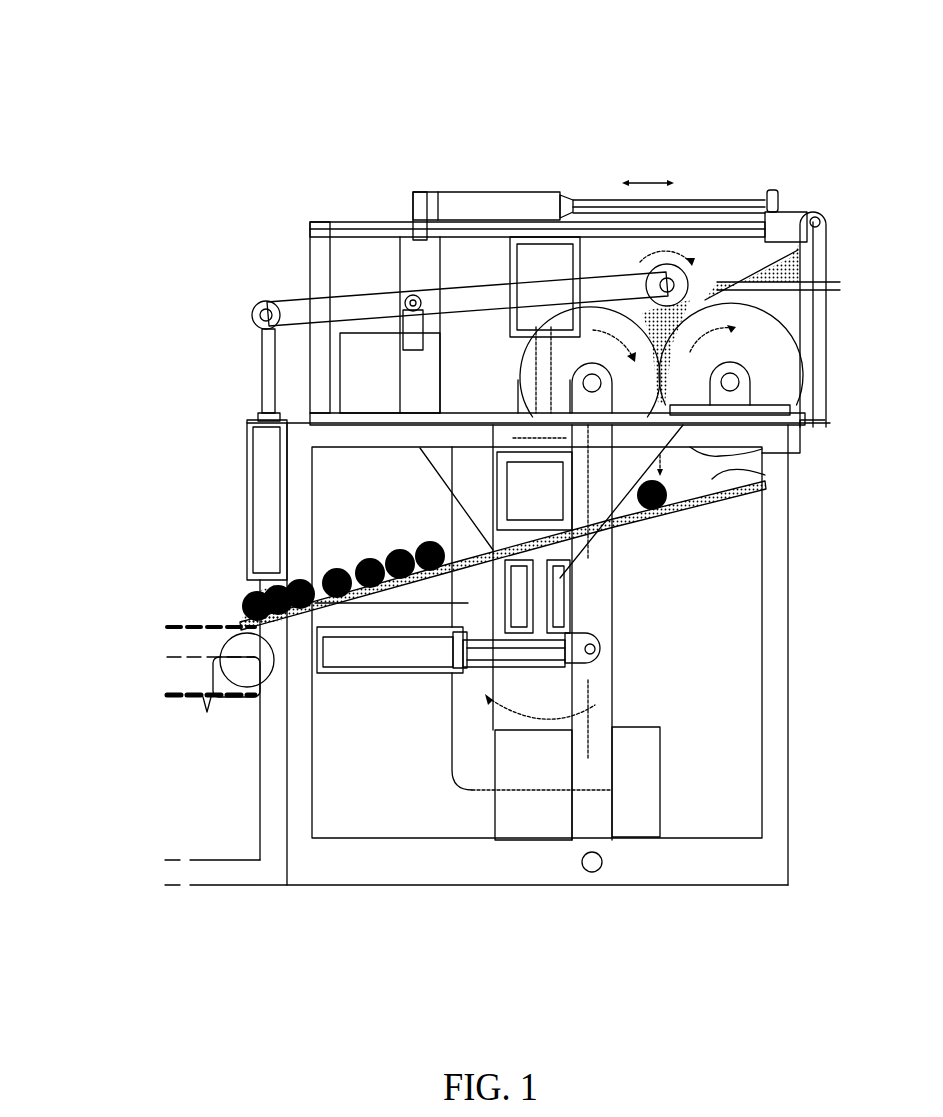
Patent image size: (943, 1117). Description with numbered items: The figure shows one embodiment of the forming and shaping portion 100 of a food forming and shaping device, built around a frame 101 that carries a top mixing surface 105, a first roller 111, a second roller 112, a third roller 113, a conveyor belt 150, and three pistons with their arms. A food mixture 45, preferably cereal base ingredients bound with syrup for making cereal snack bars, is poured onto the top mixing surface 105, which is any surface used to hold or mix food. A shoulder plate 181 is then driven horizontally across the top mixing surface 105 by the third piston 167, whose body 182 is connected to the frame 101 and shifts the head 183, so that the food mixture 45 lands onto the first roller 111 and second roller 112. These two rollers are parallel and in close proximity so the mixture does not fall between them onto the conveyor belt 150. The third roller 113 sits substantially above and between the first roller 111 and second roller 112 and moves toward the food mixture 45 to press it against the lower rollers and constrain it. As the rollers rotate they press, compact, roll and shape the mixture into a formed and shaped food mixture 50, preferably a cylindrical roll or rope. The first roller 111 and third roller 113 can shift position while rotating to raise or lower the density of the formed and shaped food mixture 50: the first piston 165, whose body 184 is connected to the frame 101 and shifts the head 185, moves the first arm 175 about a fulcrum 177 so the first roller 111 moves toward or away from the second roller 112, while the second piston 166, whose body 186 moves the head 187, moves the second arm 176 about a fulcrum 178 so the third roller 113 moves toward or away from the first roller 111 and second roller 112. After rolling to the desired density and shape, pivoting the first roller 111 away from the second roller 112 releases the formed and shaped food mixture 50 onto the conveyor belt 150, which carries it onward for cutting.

The forming and shaping portion 100 is at (795, 55).
The frame 101 is at (796, 678).
The third piston 167 is at (437, 166).
The third roller 113 is at (688, 237).
The body 182 is at (535, 190).
The head 183 is at (772, 190).
The shoulder plate 181 is at (812, 214).
The head 187 is at (262, 305).
The fulcrum 178 is at (413, 296).
The second arm 176 is at (598, 292).
The first roller 111 is at (528, 367).
The second roller 112 is at (783, 367).
The top mixing surface 105 is at (797, 289).
The food mixture 45 is at (826, 258).
The body 186 is at (267, 485).
The second piston 166 is at (228, 398).
The conveyor belt 150 is at (200, 620).
The formed and shaped food mixture 50 is at (250, 583).
The first piston 165 is at (365, 692).
The body 184 is at (399, 672).
The head 185 is at (605, 650).
The first arm 175 is at (590, 742).
The fulcrum 177 is at (608, 858).